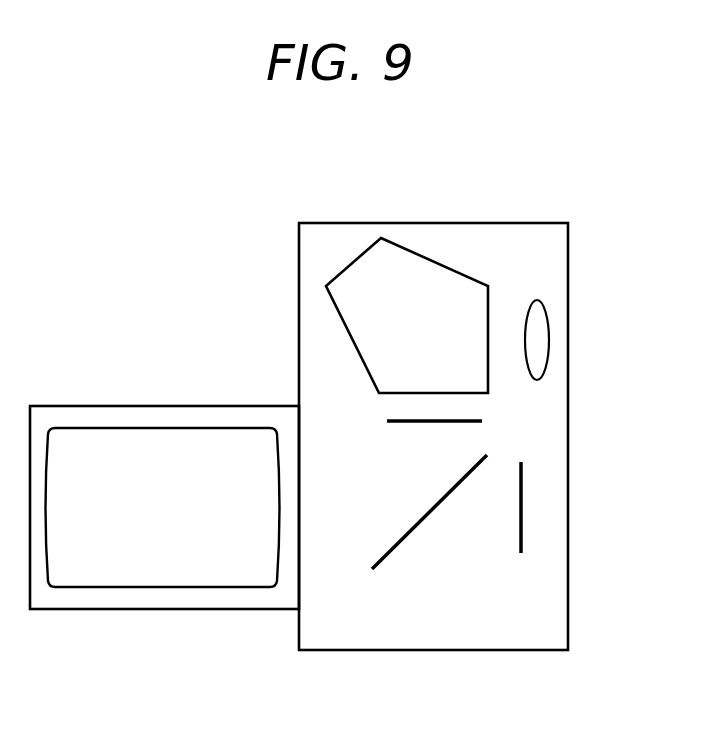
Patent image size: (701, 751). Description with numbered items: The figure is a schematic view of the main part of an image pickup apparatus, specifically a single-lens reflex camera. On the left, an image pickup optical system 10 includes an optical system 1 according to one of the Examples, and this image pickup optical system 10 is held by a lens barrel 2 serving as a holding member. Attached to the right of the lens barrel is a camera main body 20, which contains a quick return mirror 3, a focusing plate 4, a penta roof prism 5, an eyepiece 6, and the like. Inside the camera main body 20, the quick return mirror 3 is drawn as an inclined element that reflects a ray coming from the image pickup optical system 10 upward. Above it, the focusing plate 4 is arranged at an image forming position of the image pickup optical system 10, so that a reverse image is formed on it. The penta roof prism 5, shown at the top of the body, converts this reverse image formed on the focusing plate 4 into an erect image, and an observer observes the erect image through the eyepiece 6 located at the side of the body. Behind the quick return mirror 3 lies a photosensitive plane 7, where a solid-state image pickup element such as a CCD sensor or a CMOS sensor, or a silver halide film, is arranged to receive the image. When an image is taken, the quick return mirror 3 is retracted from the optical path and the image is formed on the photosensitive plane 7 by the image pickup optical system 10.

The optical system 1 is at (123, 428).
The lens barrel 2 is at (175, 609).
The quick return mirror 3 is at (405, 538).
The focusing plate 4 is at (408, 423).
The penta roof prism 5 is at (353, 256).
The eyepiece 6 is at (548, 333).
The photosensitive plane 7 is at (524, 491).
The image pickup optical system 10 is at (218, 406).
The camera main body 20 is at (438, 222).